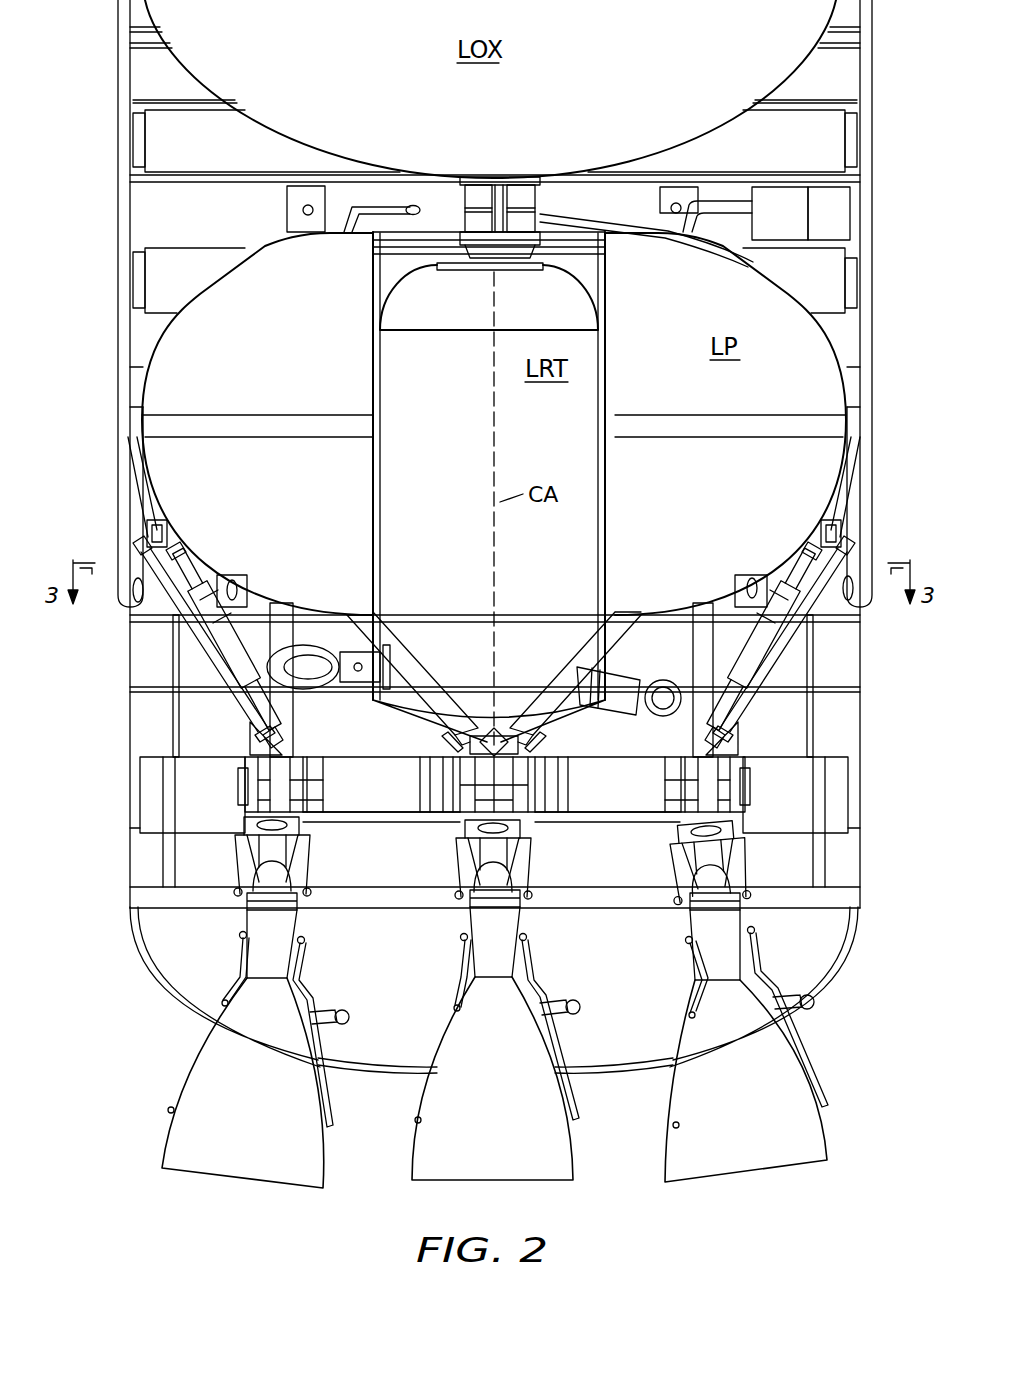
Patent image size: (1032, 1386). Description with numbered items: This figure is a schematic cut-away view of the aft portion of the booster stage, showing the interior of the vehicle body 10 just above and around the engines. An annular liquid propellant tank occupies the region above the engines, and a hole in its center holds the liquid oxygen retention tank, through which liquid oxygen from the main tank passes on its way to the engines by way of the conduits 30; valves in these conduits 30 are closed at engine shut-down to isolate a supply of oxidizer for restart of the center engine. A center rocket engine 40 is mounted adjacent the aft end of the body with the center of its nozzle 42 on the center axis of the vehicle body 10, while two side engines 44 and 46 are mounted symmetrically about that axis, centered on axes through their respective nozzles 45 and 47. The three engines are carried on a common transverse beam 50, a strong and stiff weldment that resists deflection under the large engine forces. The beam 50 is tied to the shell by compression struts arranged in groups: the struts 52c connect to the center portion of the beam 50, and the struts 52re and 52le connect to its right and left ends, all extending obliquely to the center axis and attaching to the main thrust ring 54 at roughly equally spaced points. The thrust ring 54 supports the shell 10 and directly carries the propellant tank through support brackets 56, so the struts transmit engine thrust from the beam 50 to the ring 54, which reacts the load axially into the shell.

The vehicle body 10 is at (878, 60).
The conduits 30 is at (512, 185).
The center rocket engine 40 is at (526, 925).
The nozzle 42 is at (580, 1165).
The side engine 44 is at (756, 924).
The nozzle 45 is at (828, 1142).
The side engine 46 is at (237, 925).
The nozzle 47 is at (162, 1142).
The transverse beam 50 is at (388, 812).
The center compression struts 52c is at (410, 648).
The left compression struts 52le is at (192, 640).
The right compression struts 52re is at (803, 640).
The main thrust ring 54 is at (145, 541).
The support brackets 56 is at (133, 478).